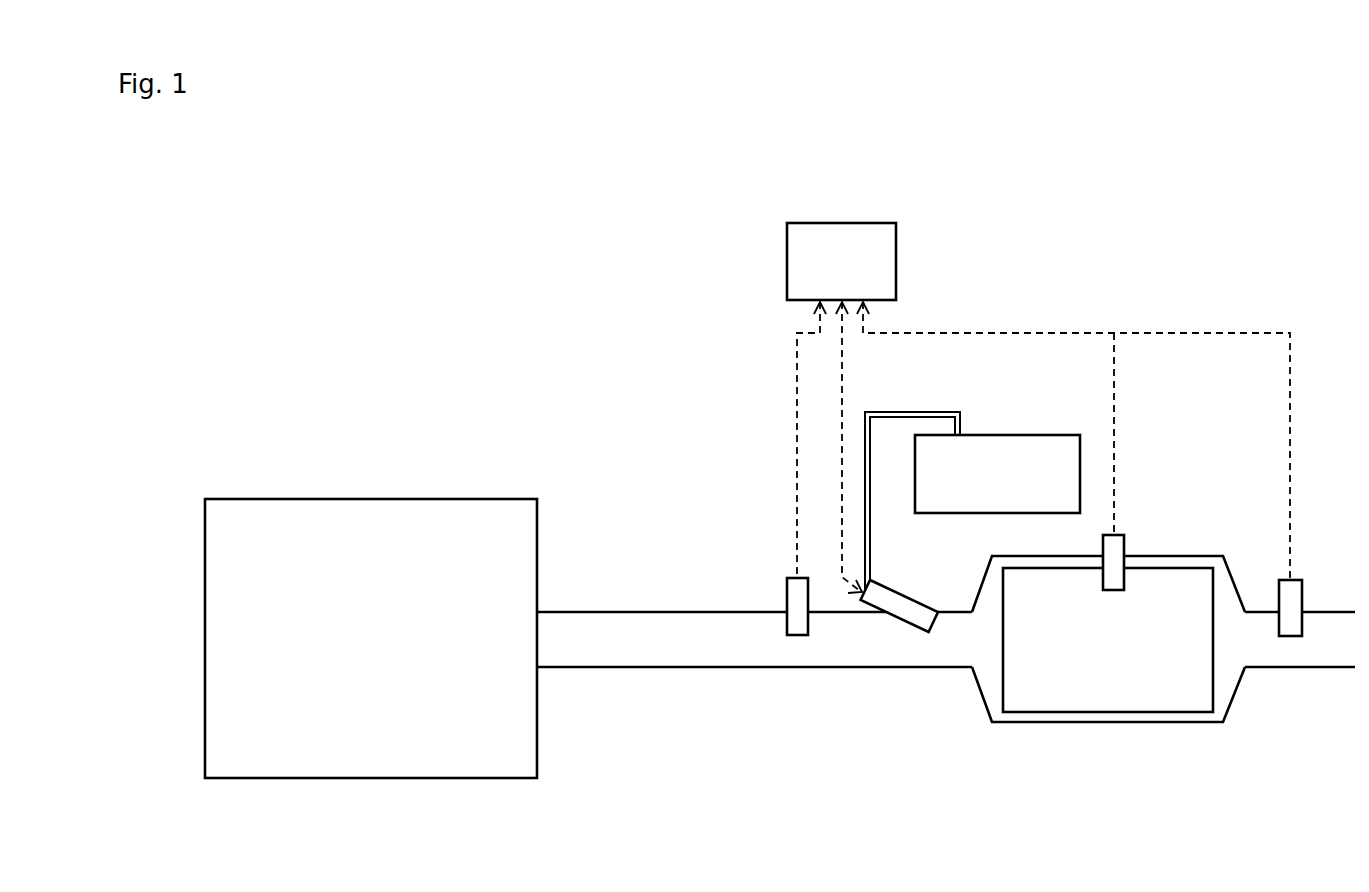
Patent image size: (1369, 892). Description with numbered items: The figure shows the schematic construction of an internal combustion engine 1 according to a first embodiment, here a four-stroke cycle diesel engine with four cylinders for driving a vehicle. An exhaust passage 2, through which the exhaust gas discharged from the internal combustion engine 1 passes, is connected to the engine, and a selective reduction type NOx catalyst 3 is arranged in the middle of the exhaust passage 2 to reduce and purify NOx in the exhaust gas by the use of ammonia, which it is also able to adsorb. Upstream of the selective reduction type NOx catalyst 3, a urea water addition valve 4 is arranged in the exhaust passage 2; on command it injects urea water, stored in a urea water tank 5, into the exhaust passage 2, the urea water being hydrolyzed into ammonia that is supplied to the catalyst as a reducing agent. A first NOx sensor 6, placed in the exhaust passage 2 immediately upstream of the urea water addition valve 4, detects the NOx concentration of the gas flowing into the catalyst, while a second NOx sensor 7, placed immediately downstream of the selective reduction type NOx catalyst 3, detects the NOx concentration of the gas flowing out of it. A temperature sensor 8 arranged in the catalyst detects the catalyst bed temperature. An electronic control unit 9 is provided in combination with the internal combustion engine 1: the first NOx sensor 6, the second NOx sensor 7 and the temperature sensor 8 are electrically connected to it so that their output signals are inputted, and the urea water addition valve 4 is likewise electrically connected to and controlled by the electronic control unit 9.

The internal combustion engine 1 is at (457, 499).
The exhaust passage 2 is at (653, 667).
The selective reduction type NOx catalyst 3 is at (1077, 693).
The urea water addition valve 4 is at (892, 585).
The urea water tank 5 is at (997, 435).
The first NOx sensor 6 is at (785, 598).
The second NOx sensor 7 is at (1302, 600).
The temperature sensor 8 is at (1127, 545).
The electronic control unit 9 is at (896, 252).